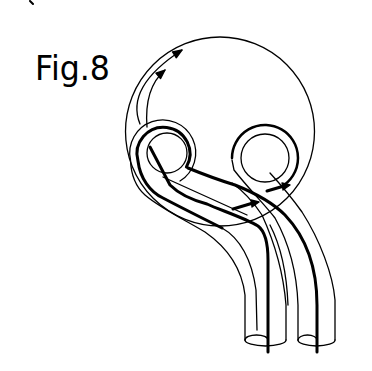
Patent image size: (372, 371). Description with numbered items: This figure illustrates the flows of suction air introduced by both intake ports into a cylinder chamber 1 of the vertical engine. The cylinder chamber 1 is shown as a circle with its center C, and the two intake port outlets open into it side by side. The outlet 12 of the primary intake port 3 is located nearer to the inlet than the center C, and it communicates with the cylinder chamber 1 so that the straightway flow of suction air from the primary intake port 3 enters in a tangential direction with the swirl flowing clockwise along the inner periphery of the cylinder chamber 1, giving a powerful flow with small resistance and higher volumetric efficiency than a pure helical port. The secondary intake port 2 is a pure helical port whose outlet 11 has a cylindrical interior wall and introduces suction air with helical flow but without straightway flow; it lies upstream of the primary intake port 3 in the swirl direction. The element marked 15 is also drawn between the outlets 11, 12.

The cylinder chamber 1 is at (294, 71).
The secondary intake port 2 is at (328, 257).
The primary intake port 3 is at (232, 257).
The outlet of the secondary intake port 11 is at (260, 133).
The outlet of the primary intake port 12 is at (182, 133).
The gap between pegs 15 is at (212, 146).
The center of the cylinder chamber C is at (219, 128).